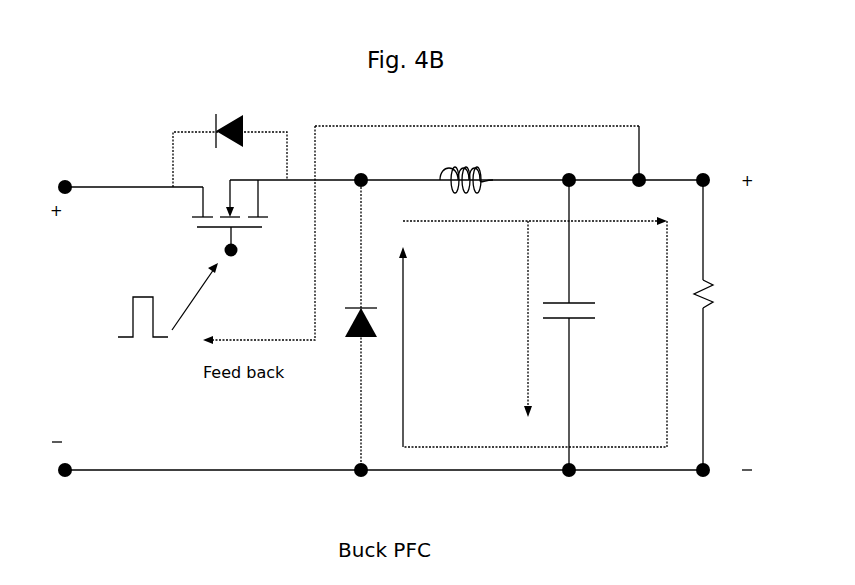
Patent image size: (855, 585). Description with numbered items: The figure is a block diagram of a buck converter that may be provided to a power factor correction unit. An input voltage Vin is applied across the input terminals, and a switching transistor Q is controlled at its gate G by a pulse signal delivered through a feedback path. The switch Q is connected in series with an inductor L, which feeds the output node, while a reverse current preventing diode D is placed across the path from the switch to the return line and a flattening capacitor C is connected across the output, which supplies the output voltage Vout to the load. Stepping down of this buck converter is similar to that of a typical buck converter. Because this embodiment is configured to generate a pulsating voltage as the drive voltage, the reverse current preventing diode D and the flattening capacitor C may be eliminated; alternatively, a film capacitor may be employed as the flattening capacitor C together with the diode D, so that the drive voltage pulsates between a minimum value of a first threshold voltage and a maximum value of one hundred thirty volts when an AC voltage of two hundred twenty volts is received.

The switching transistor (MOSFET) Q is at (213, 211).
The gate of transistor Q G is at (205, 278).
The inductor L is at (466, 164).
The reverse current preventing diode D is at (368, 325).
The flattening capacitor C is at (576, 325).
The input voltage / gate drive pulse Vin is at (106, 317).
The output voltage across load Vout is at (727, 325).